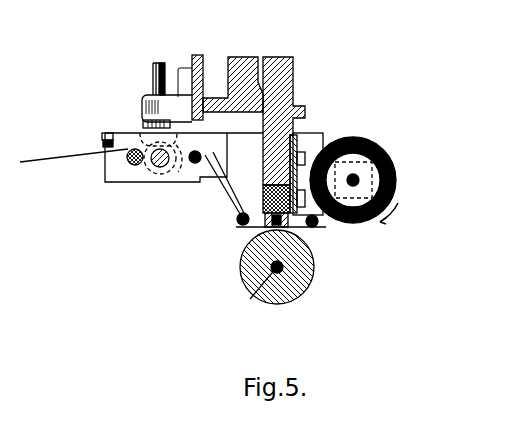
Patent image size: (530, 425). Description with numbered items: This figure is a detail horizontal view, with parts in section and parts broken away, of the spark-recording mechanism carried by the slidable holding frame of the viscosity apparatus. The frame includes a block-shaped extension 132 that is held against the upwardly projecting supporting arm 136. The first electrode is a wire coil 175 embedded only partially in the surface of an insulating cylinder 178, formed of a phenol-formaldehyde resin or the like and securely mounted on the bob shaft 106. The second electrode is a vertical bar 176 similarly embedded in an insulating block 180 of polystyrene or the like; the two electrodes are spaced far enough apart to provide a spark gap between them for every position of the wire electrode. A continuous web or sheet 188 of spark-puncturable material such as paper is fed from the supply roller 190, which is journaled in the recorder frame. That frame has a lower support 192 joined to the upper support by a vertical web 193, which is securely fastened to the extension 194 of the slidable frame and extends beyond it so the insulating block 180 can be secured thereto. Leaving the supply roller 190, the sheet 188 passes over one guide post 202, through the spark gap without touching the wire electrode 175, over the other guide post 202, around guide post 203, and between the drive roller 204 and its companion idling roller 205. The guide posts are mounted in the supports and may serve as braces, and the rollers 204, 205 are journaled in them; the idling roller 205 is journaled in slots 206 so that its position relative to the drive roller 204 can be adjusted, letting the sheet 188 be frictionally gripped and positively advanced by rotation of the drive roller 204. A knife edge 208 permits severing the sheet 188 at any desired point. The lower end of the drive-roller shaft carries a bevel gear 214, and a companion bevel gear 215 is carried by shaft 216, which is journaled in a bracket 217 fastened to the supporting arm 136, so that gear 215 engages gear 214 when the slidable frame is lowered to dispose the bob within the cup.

The bob shaft 106 is at (251, 301).
The block-shaped extension 132 is at (292, 58).
The supporting arm 136 is at (245, 57).
The wire coil 175 is at (243, 292).
The vertical bar 176 is at (266, 214).
The insulating cylinder 178 is at (306, 291).
The insulating block 180 is at (266, 186).
The continuous web or sheet 188 is at (213, 184).
The supply roller 190 is at (398, 181).
The lower support 192 is at (218, 204).
The vertical web 193 is at (300, 134).
The extension of slidable frame 194 is at (293, 133).
The guide post 202 is at (240, 226).
The guide post 203 is at (201, 156).
The drive roller 204 is at (156, 167).
The idling roller 205 is at (133, 163).
The slots 206 is at (105, 153).
The knife edge 208 is at (104, 143).
The bevel gear 214 is at (178, 147).
The companion bevel gear 215 is at (145, 133).
The shaft 216 is at (152, 63).
The bracket 217 is at (205, 55).